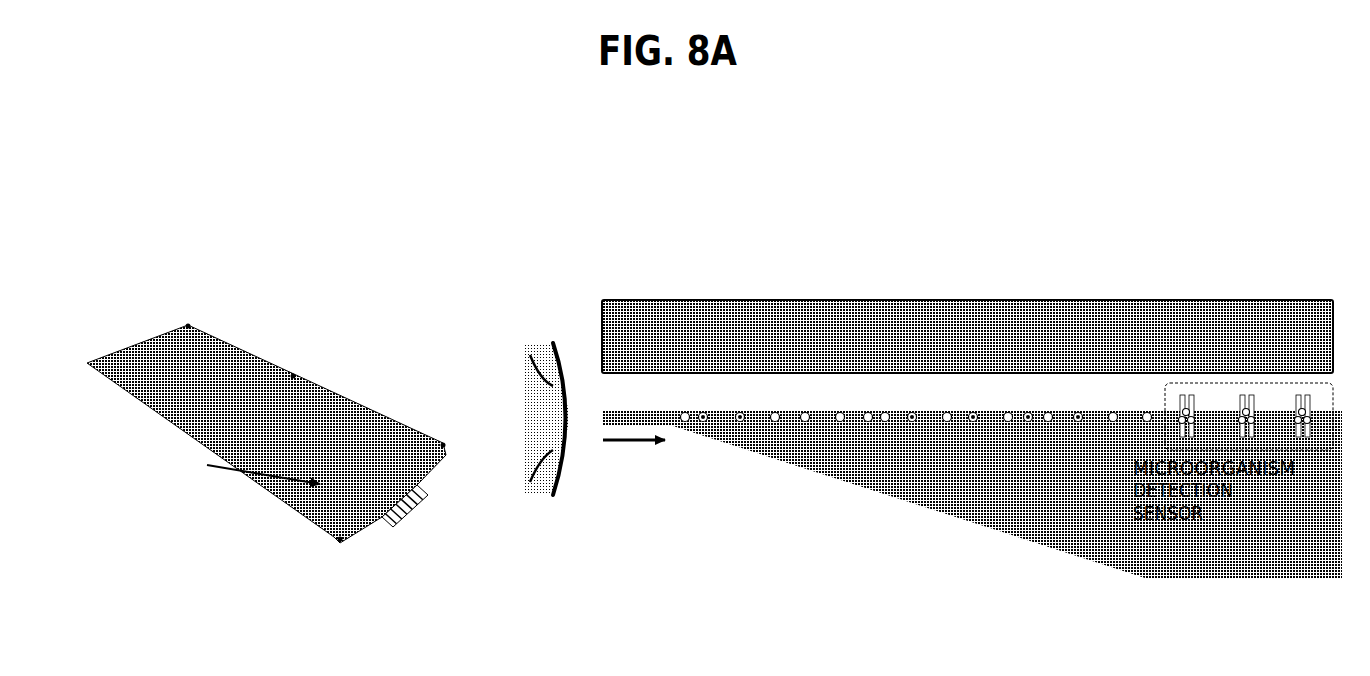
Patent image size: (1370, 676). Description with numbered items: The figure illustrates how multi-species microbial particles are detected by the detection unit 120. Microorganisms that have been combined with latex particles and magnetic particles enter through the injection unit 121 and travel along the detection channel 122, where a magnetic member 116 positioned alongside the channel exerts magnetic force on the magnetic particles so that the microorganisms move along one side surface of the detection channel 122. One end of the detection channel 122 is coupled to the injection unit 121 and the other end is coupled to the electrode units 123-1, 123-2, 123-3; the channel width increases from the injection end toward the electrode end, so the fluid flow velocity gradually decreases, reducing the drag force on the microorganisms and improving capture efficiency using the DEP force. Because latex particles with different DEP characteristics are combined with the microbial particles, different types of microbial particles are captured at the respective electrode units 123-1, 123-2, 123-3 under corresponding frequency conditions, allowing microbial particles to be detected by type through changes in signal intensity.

The detection unit 120 is at (289, 304).
The magnetic member 116 is at (1059, 296).
The injection unit 121 is at (597, 419).
The detection channel 122 is at (887, 497).
The electrode unit 123-1 is at (1186, 393).
The electrode unit 123-2 is at (1244, 393).
The electrode unit 123-3 is at (1303, 393).